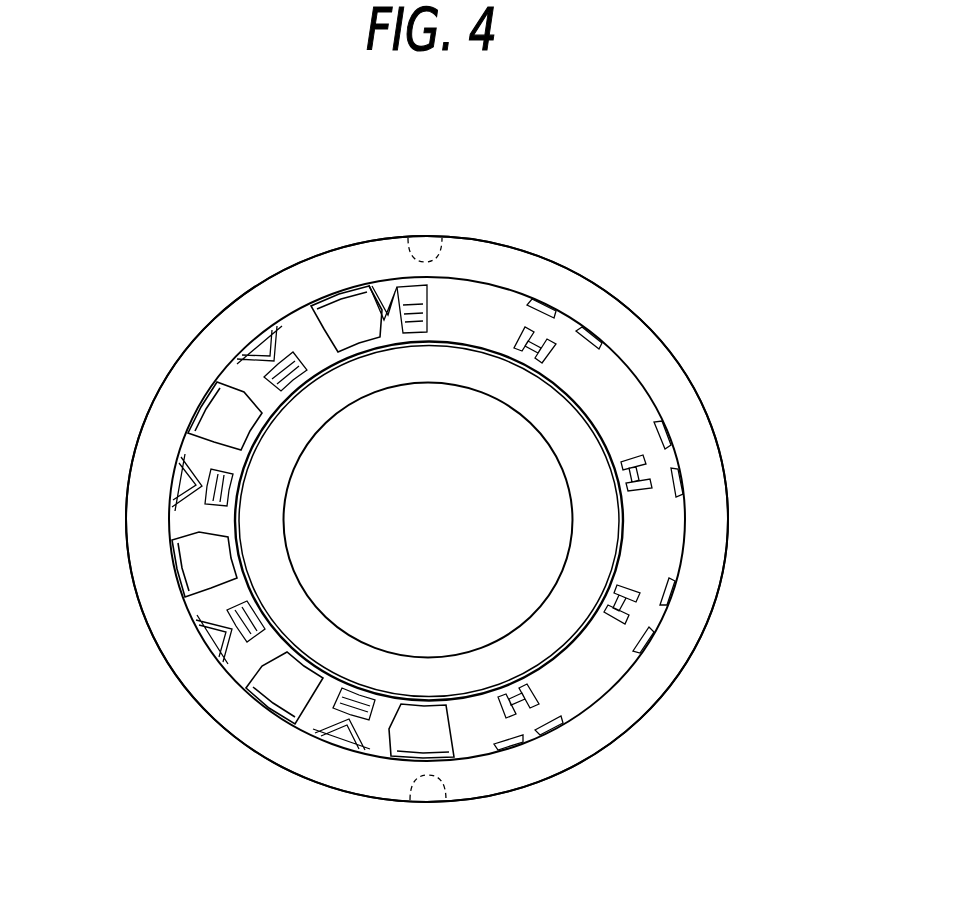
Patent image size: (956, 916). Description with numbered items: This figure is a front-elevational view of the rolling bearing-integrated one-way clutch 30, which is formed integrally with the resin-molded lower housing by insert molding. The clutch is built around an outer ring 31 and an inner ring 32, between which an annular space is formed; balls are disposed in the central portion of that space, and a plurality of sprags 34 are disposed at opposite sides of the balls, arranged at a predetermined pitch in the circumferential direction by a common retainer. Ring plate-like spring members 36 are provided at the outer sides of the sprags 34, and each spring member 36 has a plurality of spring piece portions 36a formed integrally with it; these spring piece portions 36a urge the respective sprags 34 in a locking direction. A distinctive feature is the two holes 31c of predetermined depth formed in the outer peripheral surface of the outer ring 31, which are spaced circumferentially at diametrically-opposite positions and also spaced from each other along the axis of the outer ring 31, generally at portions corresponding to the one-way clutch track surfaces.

The rolling bearing-integrated one-way clutch 30 is at (727, 361).
The outer ring 31 is at (710, 478).
The holes 31c is at (423, 237).
The inner ring 32 is at (325, 630).
The sprags 34 is at (347, 313).
The spring members 36 is at (586, 355).
The spring piece portions 36a is at (437, 292).